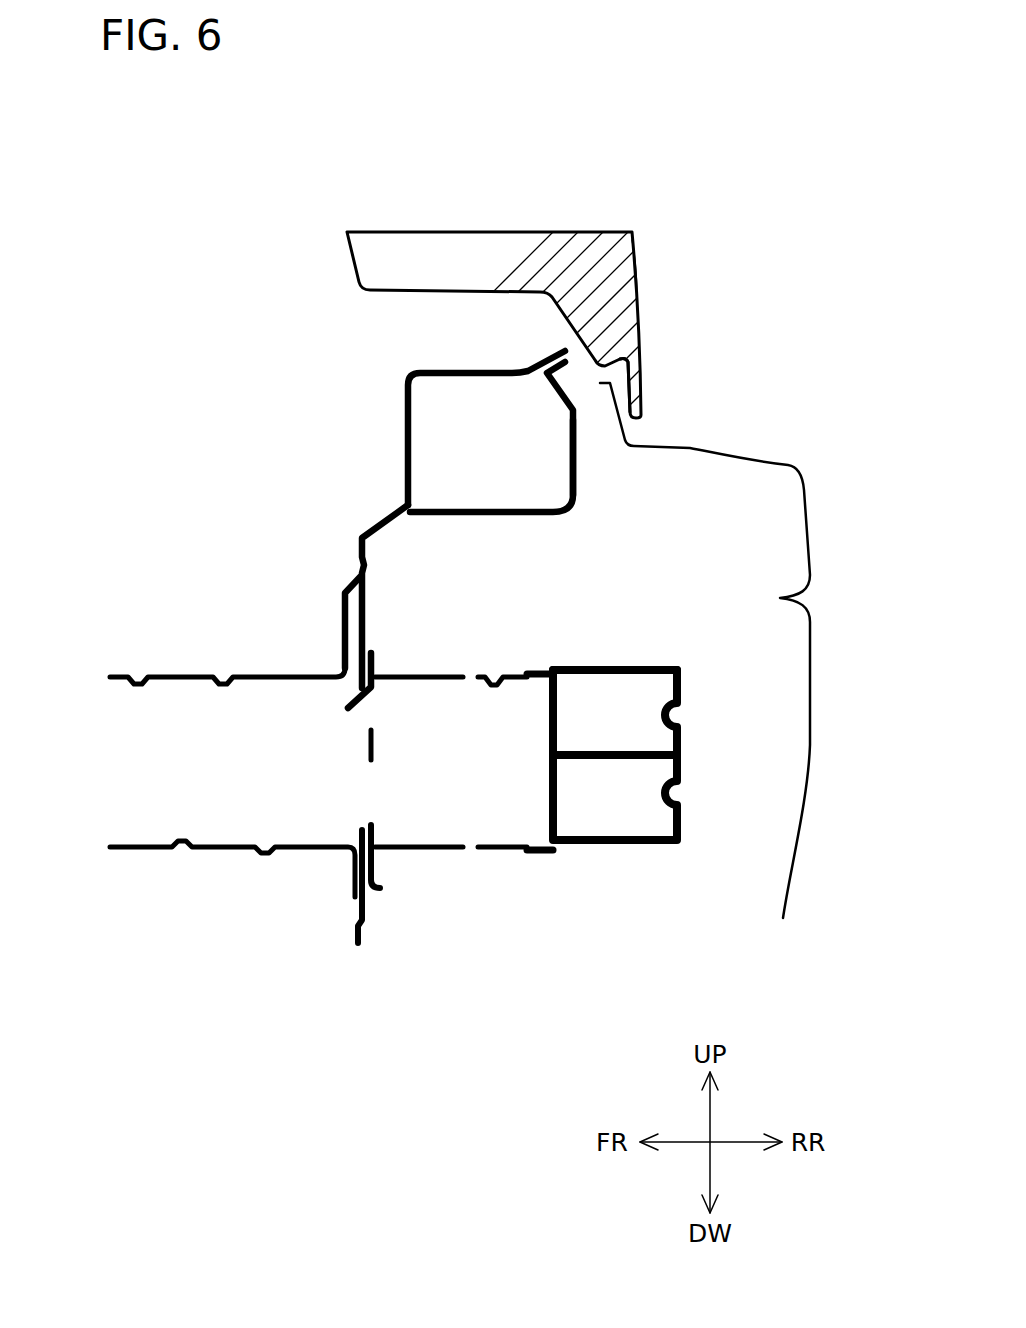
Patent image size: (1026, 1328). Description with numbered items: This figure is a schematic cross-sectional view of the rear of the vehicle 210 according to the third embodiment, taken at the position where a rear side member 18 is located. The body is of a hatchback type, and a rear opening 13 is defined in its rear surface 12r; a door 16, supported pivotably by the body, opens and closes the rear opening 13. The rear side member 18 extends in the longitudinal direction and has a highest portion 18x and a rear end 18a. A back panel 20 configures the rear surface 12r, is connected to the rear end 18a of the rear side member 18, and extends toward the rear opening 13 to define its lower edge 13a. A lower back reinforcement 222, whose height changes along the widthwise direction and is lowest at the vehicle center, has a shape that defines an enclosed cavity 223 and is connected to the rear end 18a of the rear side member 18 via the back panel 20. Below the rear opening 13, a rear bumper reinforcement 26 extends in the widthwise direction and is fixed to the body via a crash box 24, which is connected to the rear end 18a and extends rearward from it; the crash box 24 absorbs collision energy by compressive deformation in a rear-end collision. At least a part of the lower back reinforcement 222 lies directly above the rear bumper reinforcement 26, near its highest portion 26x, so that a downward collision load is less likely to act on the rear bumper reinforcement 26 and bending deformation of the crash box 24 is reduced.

The vehicle 210 is at (200, 205).
The rear opening 13 is at (557, 232).
The lower edge of the rear opening 13a is at (563, 347).
The door 16 is at (630, 281).
The rear surface of the body 12r is at (822, 440).
The lower back reinforcement 222 is at (575, 458).
The enclosed cavity 223 is at (441, 422).
The back panel 20 is at (363, 602).
The highest portion of the rear side member 18x is at (200, 670).
The rear side member 18 is at (138, 850).
The rear end of the rear side member 18a is at (372, 867).
The crash box 24 is at (493, 850).
The rear bumper reinforcement 26 is at (680, 775).
The highest portion of the rear bumper reinforcement 26x is at (640, 667).